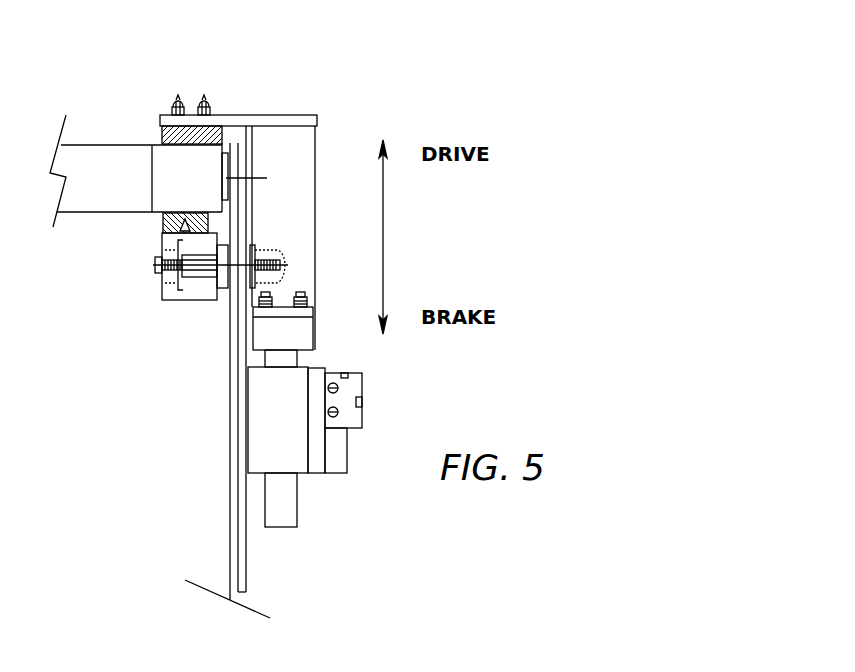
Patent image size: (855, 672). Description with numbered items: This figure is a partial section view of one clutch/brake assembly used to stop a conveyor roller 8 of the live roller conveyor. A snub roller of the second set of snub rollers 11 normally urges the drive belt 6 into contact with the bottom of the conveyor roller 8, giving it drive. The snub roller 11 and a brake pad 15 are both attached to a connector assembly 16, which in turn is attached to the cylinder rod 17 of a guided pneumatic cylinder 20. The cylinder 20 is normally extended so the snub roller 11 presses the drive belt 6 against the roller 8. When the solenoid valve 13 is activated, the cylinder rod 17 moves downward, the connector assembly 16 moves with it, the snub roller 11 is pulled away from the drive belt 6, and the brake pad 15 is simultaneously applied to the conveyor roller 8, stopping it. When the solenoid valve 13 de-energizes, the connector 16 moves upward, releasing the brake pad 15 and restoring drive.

The conveyor roller 8 is at (82, 143).
The brake pad 15 is at (158, 137).
The connector assembly 16 is at (317, 153).
The drive belt 6 is at (162, 220).
The second set of snub rollers 11 is at (163, 300).
The guided pneumatic cylinder 20 is at (258, 397).
The cylinder rod 17 is at (312, 359).
The solenoid valve 13 is at (337, 445).